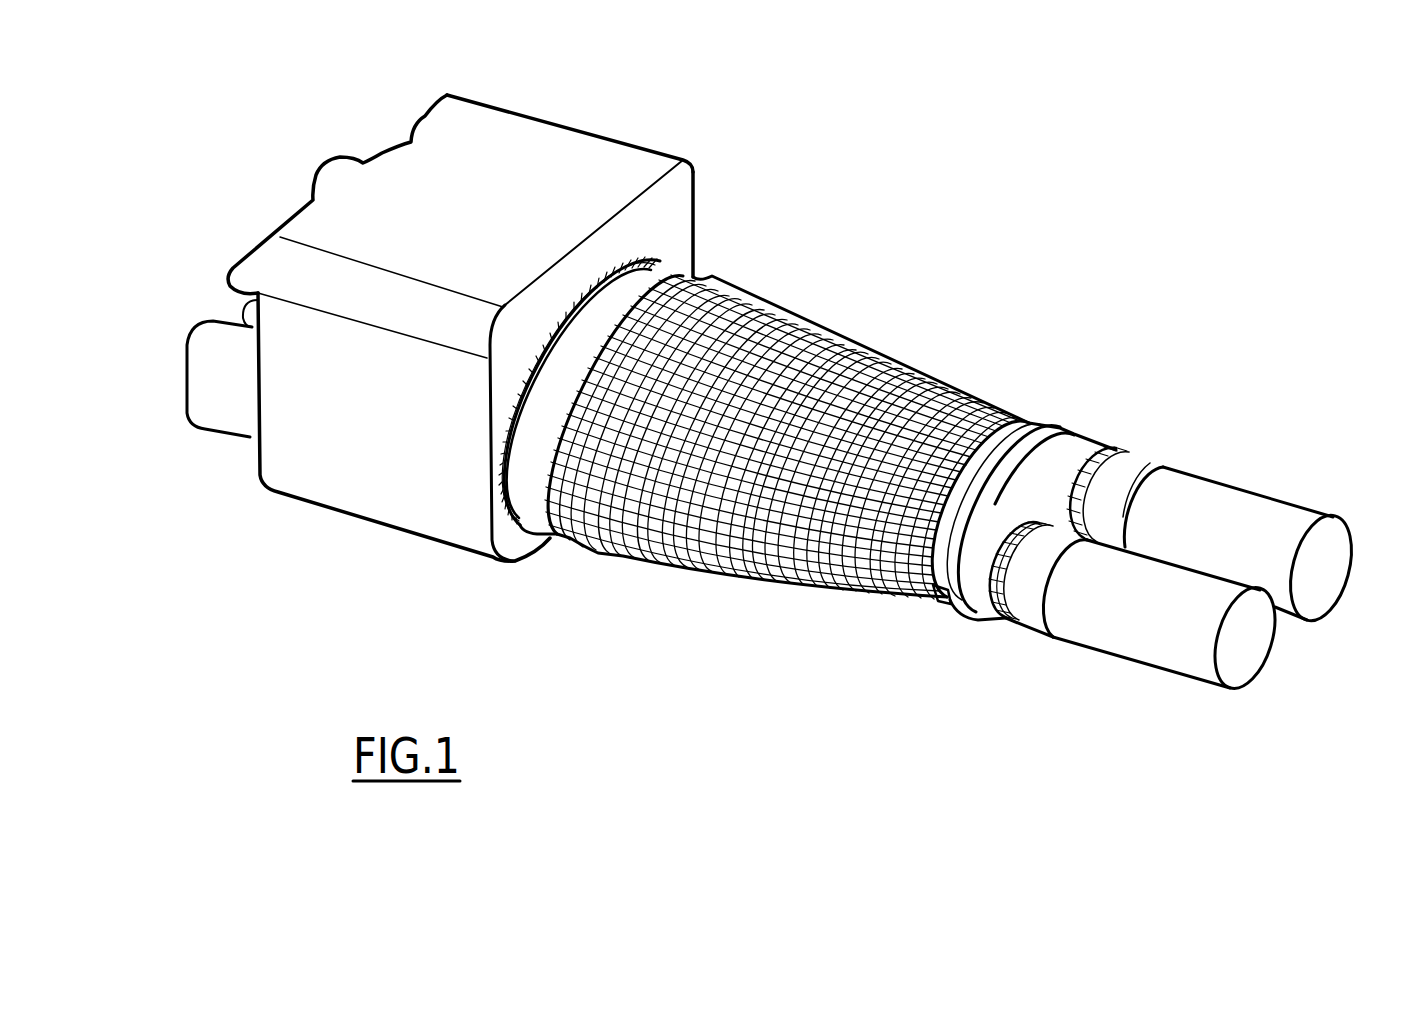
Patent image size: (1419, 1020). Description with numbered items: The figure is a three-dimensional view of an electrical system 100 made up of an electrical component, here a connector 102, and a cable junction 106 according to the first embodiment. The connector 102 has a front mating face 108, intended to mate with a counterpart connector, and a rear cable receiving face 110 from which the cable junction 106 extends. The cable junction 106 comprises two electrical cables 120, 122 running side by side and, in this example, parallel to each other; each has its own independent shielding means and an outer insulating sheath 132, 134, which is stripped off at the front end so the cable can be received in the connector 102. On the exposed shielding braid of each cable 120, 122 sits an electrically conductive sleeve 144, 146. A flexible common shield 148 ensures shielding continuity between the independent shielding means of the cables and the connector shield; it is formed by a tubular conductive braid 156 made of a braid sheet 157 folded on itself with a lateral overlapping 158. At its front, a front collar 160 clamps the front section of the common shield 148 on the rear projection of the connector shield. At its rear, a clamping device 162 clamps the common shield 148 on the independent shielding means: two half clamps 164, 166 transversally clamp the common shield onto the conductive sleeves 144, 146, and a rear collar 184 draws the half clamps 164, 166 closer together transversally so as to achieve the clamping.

The electrical system 100 is at (660, 728).
The connector 102 is at (572, 103).
The cable junction 106 is at (1062, 222).
The front mating face 108 is at (228, 243).
The rear cable receiving face 110 is at (715, 207).
The electrical cable 120 is at (1265, 462).
The electrical cable 122 is at (1118, 710).
The outer insulating sheath 132 is at (1295, 518).
The outer insulating sheath 134 is at (1185, 652).
The electrically conductive sleeve 144 is at (1130, 483).
The electrically conductive sleeve 146 is at (1033, 610).
The flexible common shield 148 is at (875, 290).
The tubular conductive braid 156 is at (900, 425).
The braid sheet 157 is at (812, 588).
The lateral overlapping 158 is at (710, 448).
The front collar 160 is at (533, 513).
The clamping device 162 is at (1105, 403).
The half clamp 164 is at (910, 582).
The half clamp 166 is at (938, 630).
The rear collar 184 is at (1017, 462).